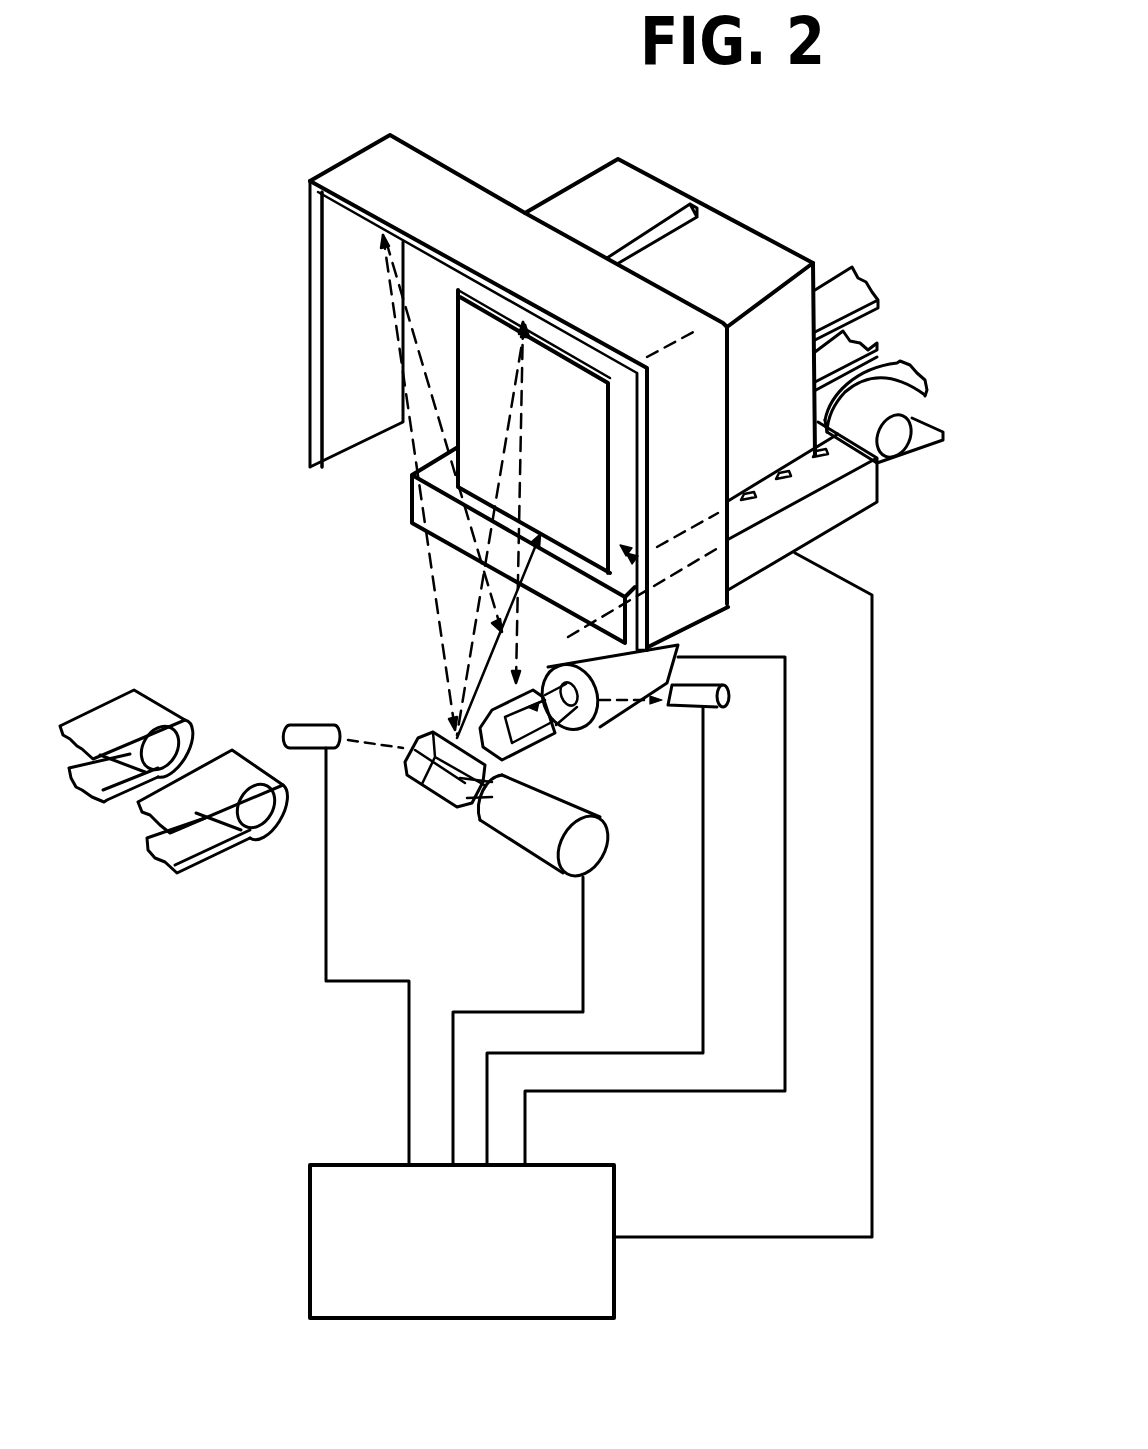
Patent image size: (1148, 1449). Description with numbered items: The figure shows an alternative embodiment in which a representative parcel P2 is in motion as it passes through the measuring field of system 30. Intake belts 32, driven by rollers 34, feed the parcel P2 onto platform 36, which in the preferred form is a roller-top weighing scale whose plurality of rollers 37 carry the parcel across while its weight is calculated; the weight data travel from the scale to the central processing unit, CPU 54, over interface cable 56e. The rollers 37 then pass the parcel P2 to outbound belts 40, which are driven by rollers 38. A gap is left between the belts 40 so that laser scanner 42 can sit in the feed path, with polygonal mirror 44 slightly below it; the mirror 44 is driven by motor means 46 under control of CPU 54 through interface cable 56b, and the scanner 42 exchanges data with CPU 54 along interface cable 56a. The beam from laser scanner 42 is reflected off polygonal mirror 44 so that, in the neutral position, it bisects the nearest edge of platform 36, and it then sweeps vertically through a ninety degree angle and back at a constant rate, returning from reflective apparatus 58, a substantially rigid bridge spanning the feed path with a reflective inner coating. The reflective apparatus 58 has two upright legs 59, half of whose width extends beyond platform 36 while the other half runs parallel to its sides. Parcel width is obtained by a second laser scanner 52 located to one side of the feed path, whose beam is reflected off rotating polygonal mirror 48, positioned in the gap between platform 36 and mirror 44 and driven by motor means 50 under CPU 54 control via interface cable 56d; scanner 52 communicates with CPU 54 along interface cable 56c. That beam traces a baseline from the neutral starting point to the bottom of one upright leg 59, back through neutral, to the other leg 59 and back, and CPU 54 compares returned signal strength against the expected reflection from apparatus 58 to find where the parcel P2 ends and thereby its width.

The system 30 is at (200, 272).
The intake belts 32 is at (832, 275).
The rollers 34 is at (893, 441).
The platform 36 is at (835, 512).
The rollers 37 is at (822, 458).
The rollers 38 is at (165, 750).
The outbound belts 40 is at (100, 697).
The laser scanner 42 is at (307, 727).
The polygonal mirror 44 is at (425, 782).
The motor means 46 is at (520, 838).
The rotating polygonal mirror 48 is at (537, 735).
The motor means 50 is at (618, 713).
The laser scanner 52 is at (727, 708).
The central processing unit 54 is at (310, 1200).
The interface cable 56a is at (408, 1098).
The interface cable 56b is at (540, 1010).
The interface cable 56c is at (663, 1050).
The interface cable 56d is at (735, 1092).
The interface cable 56e is at (775, 1236).
The reflective apparatus 58 is at (487, 203).
The upright legs 59 is at (333, 415).
The parcel P2 is at (732, 228).